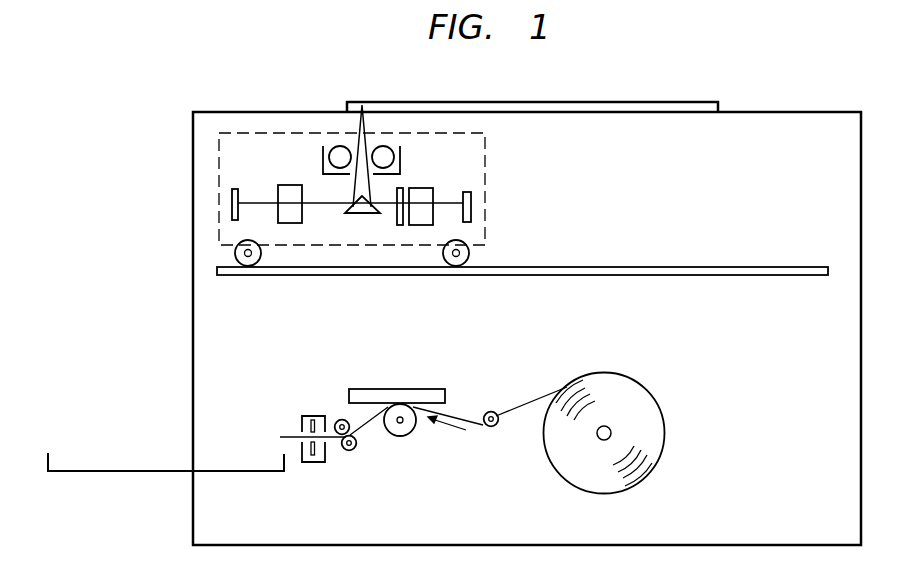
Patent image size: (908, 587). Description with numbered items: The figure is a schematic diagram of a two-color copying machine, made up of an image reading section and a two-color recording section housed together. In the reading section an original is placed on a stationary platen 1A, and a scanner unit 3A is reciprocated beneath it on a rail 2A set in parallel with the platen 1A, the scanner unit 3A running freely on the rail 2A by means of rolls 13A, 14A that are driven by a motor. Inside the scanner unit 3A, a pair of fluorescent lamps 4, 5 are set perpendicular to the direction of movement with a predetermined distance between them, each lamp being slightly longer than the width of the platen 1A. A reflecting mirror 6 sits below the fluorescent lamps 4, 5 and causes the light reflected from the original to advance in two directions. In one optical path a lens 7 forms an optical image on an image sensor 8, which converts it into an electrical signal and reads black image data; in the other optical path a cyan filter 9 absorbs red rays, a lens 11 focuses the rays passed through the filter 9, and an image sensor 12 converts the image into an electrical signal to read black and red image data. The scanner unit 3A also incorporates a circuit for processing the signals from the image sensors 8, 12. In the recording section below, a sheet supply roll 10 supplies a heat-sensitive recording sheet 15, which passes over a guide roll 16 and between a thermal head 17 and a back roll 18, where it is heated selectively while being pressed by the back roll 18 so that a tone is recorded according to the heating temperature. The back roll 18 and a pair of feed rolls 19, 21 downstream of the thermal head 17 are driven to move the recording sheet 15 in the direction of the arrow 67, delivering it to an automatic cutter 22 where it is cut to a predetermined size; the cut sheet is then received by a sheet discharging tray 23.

The stationary platen 1A is at (669, 102).
The rail 2A is at (567, 267).
The scanner unit 3A is at (487, 196).
The fluorescent lamp 4 is at (339, 146).
The fluorescent lamp 5 is at (381, 146).
The reflecting mirror 6 is at (358, 213).
The lens 7 is at (291, 185).
The image sensor 8 is at (234, 189).
The cyan filter 9 is at (401, 188).
The lens 11 is at (424, 188).
The image sensor 12 is at (467, 192).
The roll 13A is at (260, 260).
The roll 14A is at (466, 260).
The sheet supply roll 10 is at (633, 393).
The heat-sensitive recording sheet 15 is at (540, 398).
The guide roll 16 is at (491, 411).
The thermal head 17 is at (422, 389).
The back roll 18 is at (402, 436).
The feed roll 19 is at (338, 420).
The feed roll 21 is at (348, 450).
The automatic cutter 22 is at (307, 416).
The sheet discharging tray 23 is at (102, 462).
The arrow 67 is at (450, 428).